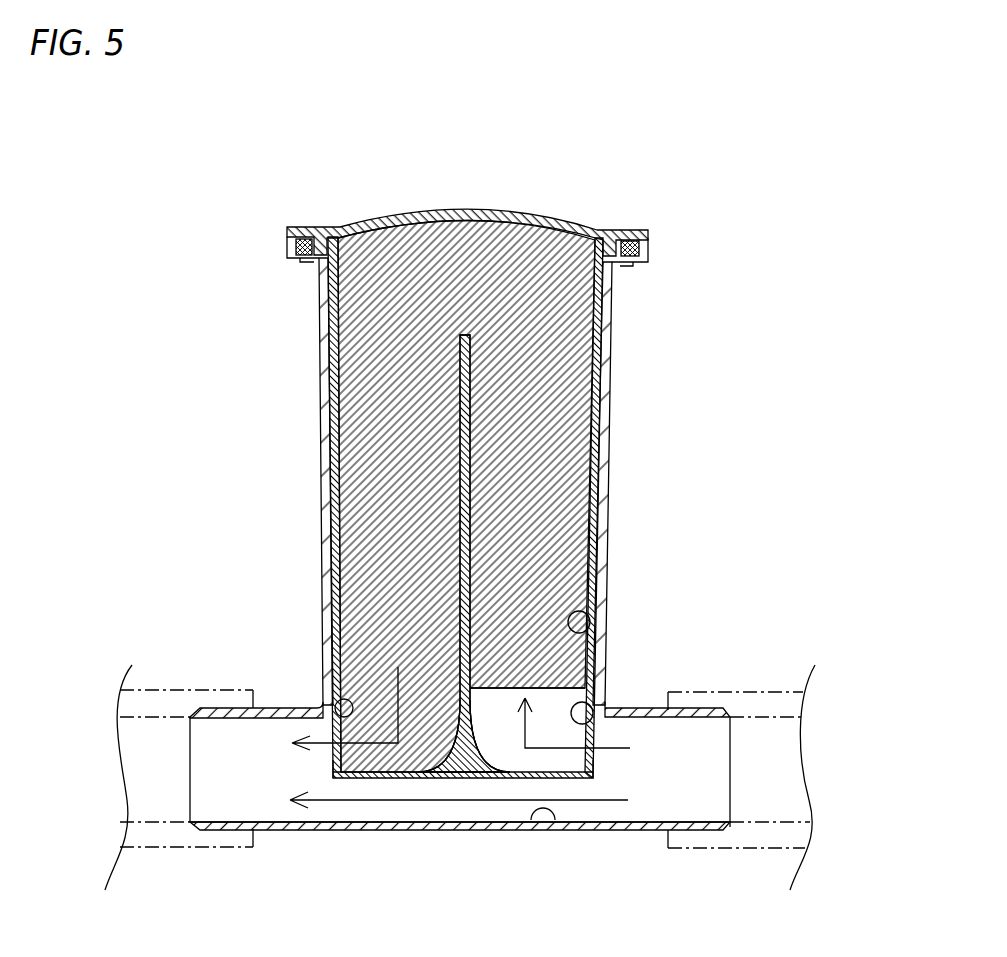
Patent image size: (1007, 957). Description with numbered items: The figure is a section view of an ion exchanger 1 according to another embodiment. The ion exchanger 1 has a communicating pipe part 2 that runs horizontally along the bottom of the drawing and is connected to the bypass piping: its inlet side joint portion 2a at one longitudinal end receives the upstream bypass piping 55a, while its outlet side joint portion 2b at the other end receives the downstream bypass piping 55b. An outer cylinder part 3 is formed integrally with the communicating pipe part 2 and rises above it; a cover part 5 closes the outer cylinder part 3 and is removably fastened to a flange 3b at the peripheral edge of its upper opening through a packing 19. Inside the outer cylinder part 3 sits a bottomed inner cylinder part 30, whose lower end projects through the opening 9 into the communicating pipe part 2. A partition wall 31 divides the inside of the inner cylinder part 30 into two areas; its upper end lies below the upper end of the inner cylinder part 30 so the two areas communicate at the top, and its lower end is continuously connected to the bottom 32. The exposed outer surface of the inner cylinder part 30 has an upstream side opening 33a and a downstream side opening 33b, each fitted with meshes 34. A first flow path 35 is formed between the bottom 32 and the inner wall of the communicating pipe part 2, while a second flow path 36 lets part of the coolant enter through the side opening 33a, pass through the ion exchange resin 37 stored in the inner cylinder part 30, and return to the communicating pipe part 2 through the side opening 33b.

The ion exchanger 1 is at (758, 208).
The communicating pipe part 2 is at (618, 830).
The inlet side joint portion 2a is at (697, 830).
The outlet side joint portion 2b is at (218, 830).
The outer cylinder part 3 is at (611, 518).
The flange 3b is at (299, 262).
The cover part 5 is at (542, 216).
The opening 9 is at (330, 727).
The packing 19 is at (293, 238).
The inner cylinder part 30 is at (601, 380).
The partition wall 31 is at (476, 466).
The bottom 32 is at (458, 780).
The side opening 33a is at (595, 706).
The side opening 33b is at (330, 705).
The meshes 34 is at (334, 758).
The first flow path 35 is at (537, 830).
The second flow path 36 is at (594, 622).
The ion exchange resin 37 is at (387, 429).
The upstream bypass piping 55a is at (735, 692).
The downstream bypass piping 55b is at (189, 690).